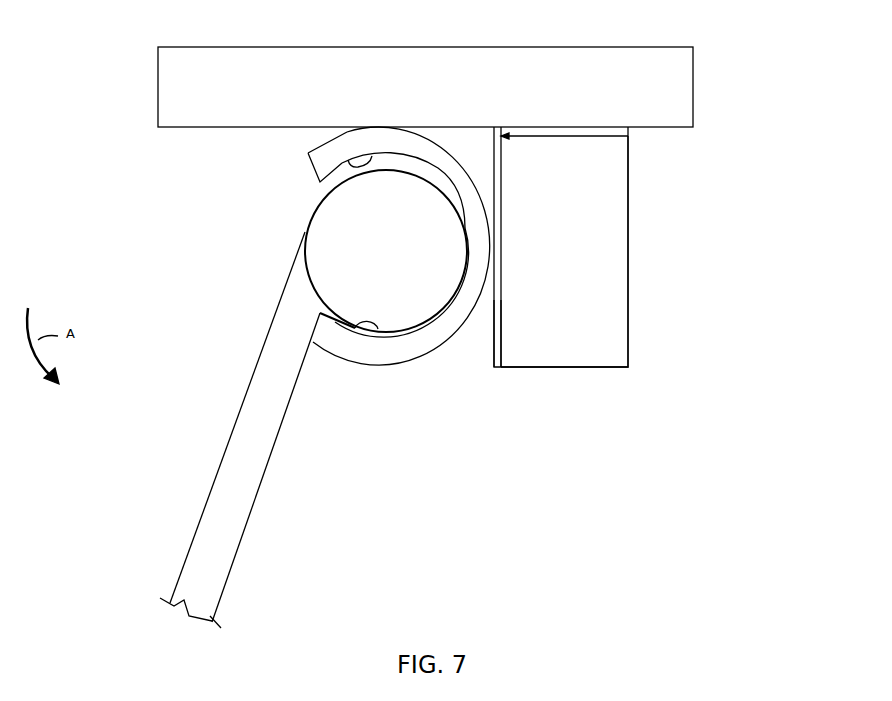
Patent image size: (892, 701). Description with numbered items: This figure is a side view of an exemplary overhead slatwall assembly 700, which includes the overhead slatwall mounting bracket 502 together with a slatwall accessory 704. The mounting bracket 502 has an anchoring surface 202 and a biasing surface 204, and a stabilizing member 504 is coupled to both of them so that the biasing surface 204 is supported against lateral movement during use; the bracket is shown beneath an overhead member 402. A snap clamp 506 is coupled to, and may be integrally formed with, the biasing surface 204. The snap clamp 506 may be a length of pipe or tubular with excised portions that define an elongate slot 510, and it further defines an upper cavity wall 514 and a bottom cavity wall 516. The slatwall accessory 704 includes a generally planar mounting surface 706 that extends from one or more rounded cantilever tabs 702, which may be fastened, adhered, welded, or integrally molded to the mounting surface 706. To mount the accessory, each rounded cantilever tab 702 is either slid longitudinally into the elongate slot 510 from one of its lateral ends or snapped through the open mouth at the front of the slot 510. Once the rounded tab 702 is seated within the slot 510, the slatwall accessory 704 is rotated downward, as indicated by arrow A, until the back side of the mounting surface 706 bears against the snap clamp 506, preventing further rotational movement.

The rail 402 is at (437, 92).
The overhead slatwall mounting bracket 502 is at (583, 269).
The stabilizing member 504 is at (593, 232).
The anchoring surface 202 is at (597, 137).
The biasing surface 204 is at (497, 347).
The overhead slatwall assembly 700 is at (267, 361).
The snap clamp 506 is at (359, 229).
The upper cavity wall 514 is at (308, 166).
The elongate slot 510 is at (467, 225).
The bottom cavity wall 516 is at (377, 328).
The rounded cantilever tab 702 is at (239, 421).
The slatwall accessory 704 is at (264, 469).
The planar mounting surface 706 is at (205, 544).